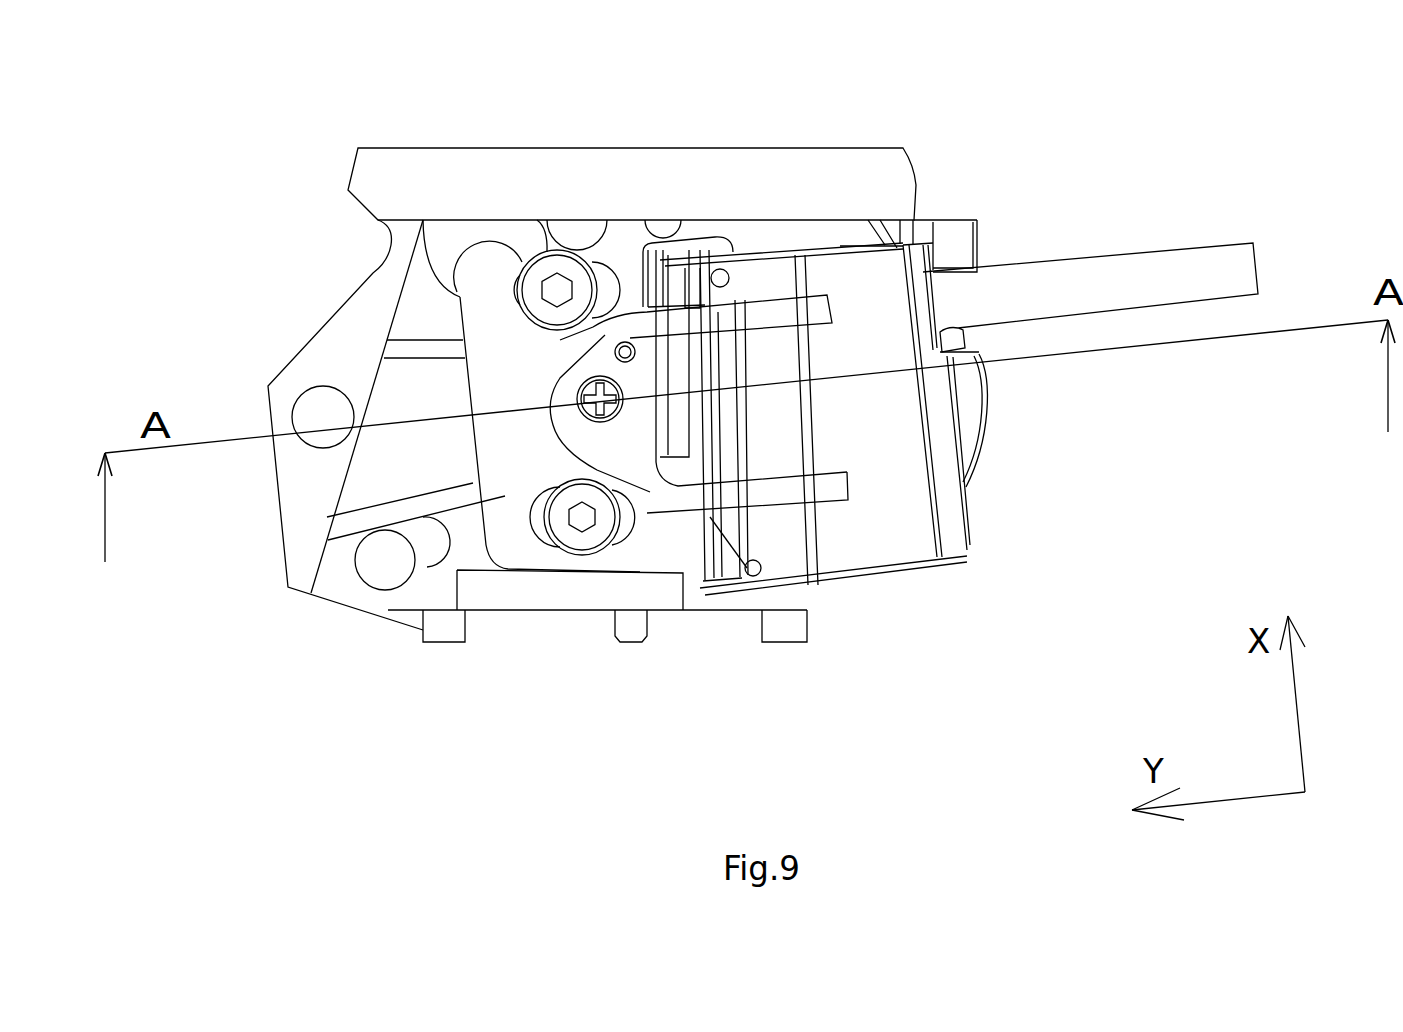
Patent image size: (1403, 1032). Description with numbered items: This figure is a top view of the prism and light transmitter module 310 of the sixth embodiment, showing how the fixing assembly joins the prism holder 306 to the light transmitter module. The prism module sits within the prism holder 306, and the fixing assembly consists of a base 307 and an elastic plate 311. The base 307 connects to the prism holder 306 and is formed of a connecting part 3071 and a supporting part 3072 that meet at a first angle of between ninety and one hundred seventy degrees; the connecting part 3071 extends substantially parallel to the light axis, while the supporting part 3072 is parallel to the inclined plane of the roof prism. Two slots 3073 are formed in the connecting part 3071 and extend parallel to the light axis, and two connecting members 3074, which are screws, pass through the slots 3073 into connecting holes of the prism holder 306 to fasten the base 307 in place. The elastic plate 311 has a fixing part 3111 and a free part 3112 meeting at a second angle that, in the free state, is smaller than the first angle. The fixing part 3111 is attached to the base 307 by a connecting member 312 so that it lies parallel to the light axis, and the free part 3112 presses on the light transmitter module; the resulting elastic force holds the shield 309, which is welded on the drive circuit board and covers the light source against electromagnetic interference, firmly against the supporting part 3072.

The prism and light transmitter module 310 is at (200, 96).
The prism holder 306 is at (440, 600).
The base 307 is at (423, 220).
The connecting part 3071 is at (483, 283).
The supporting part 3072 is at (833, 232).
The slot 3073 is at (639, 245).
The connecting member 3074 is at (567, 543).
The shield 309 is at (905, 530).
The elastic plate 311 is at (748, 566).
The fixing part 3111 is at (573, 540).
The free part 3112 is at (830, 482).
The connecting member 312 is at (632, 380).